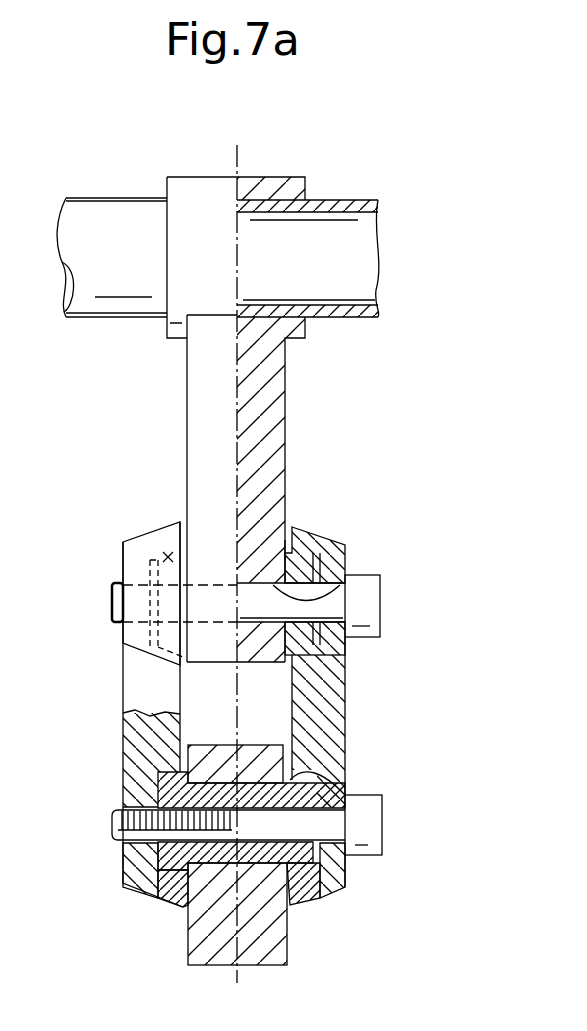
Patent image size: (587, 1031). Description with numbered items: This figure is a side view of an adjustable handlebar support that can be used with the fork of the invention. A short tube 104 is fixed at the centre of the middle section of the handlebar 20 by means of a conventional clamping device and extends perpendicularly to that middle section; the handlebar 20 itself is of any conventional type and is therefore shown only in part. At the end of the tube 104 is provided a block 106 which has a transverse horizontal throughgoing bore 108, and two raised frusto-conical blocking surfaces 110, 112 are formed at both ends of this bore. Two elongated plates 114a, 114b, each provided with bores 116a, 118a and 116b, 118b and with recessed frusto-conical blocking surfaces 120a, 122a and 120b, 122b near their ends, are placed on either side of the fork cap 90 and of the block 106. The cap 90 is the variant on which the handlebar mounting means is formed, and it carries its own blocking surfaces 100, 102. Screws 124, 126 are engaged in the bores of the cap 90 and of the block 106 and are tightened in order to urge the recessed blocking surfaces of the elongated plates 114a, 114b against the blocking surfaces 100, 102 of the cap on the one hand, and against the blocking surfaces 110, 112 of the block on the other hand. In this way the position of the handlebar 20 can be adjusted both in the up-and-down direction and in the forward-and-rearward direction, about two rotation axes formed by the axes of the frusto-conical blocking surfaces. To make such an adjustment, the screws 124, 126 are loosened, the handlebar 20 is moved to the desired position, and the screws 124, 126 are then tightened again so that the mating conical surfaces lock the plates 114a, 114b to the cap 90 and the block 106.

The handlebar 20 is at (105, 295).
The cap 90 is at (280, 957).
The blocking surface 100 is at (345, 775).
The blocking surface 102 is at (163, 772).
The tube 104 is at (207, 425).
The block 106 is at (268, 513).
The bore 108 is at (345, 580).
The blocking surface 110 is at (297, 553).
The blocking surface 112 is at (166, 555).
The elongated plate 114a is at (333, 713).
The elongated plate 114b is at (135, 700).
The bore 116a is at (350, 645).
The bore 116b is at (133, 624).
The bore 118a is at (347, 882).
The bore 118b is at (147, 850).
The recessed frusto-conical blocking surface 120a is at (347, 683).
The recessed frusto-conical blocking surface 120b is at (125, 573).
The recessed frusto-conical blocking surface 122a is at (307, 900).
The recessed frusto-conical blocking surface 122b is at (175, 897).
The screw 124 is at (372, 602).
The screw 126 is at (372, 817).